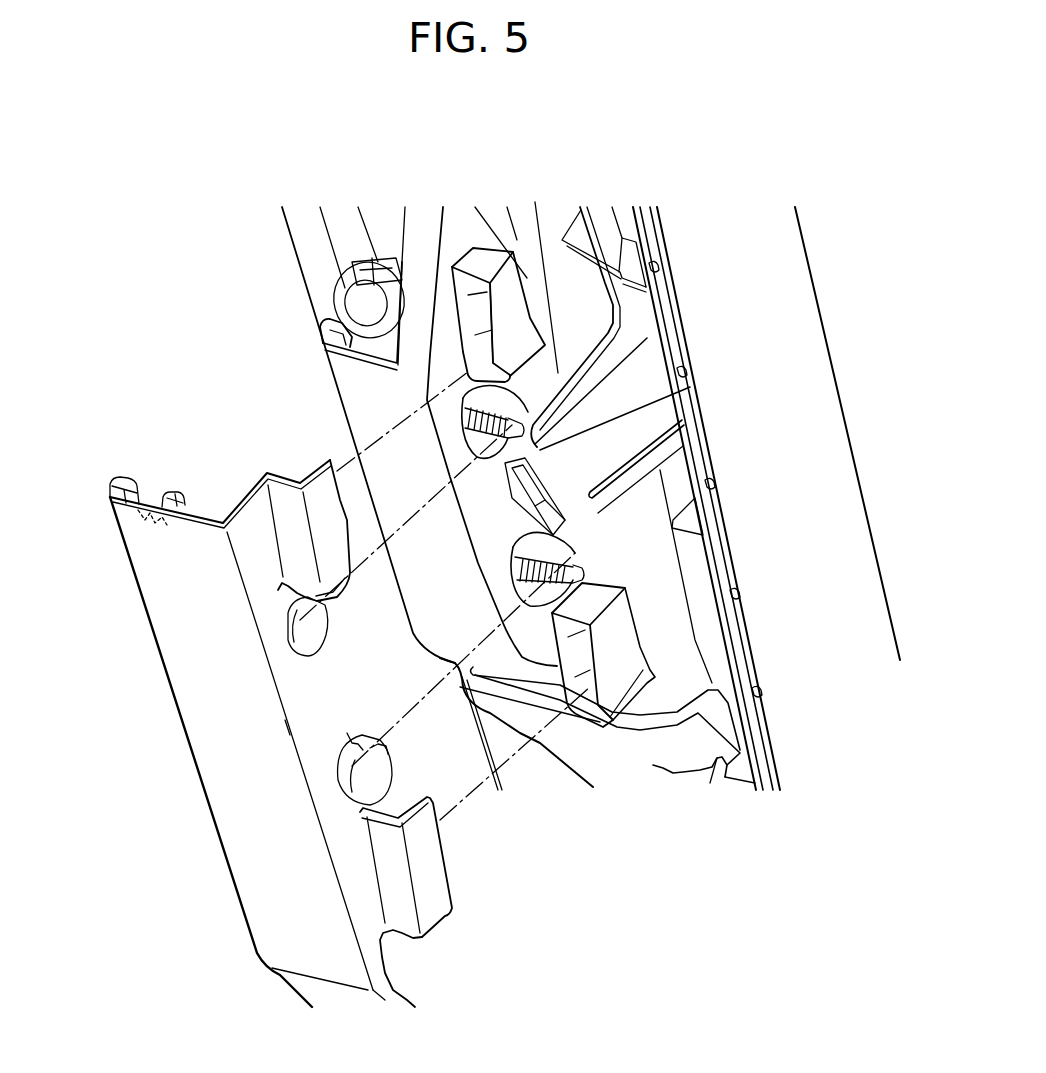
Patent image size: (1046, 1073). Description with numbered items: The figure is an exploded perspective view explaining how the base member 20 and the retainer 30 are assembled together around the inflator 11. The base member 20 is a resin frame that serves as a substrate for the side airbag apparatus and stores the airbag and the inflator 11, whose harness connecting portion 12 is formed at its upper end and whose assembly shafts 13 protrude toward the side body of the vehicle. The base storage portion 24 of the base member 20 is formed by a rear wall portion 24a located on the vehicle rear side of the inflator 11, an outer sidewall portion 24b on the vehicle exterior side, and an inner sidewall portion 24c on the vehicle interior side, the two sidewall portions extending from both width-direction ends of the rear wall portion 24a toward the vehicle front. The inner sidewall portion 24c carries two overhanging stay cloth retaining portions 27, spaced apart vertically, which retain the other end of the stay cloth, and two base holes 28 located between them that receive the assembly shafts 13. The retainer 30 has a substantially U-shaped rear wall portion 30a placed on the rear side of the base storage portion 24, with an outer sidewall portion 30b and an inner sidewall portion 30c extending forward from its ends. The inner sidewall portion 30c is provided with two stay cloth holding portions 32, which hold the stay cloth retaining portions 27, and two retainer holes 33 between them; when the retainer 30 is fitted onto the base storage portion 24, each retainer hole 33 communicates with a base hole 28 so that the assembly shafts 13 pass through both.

The inflator 11 is at (340, 302).
The harness connecting portion 12 is at (371, 294).
The assembly shafts 13 is at (517, 563).
The base member 20 is at (631, 196).
The base storage portion 24 is at (226, 311).
The rear wall portion 24a is at (347, 373).
The outer sidewall portion 24b is at (333, 320).
The inner sidewall portion 24c is at (387, 383).
The stay cloth retaining portions 27 is at (503, 297).
The base holes 28 is at (547, 543).
The retainer 30 is at (66, 597).
The rear wall portion 30a is at (175, 603).
The outer sidewall portion 30b is at (125, 496).
The inner sidewall portion 30c is at (267, 605).
The stay cloth holding portions 32 is at (322, 482).
The retainer holes 33 is at (362, 733).